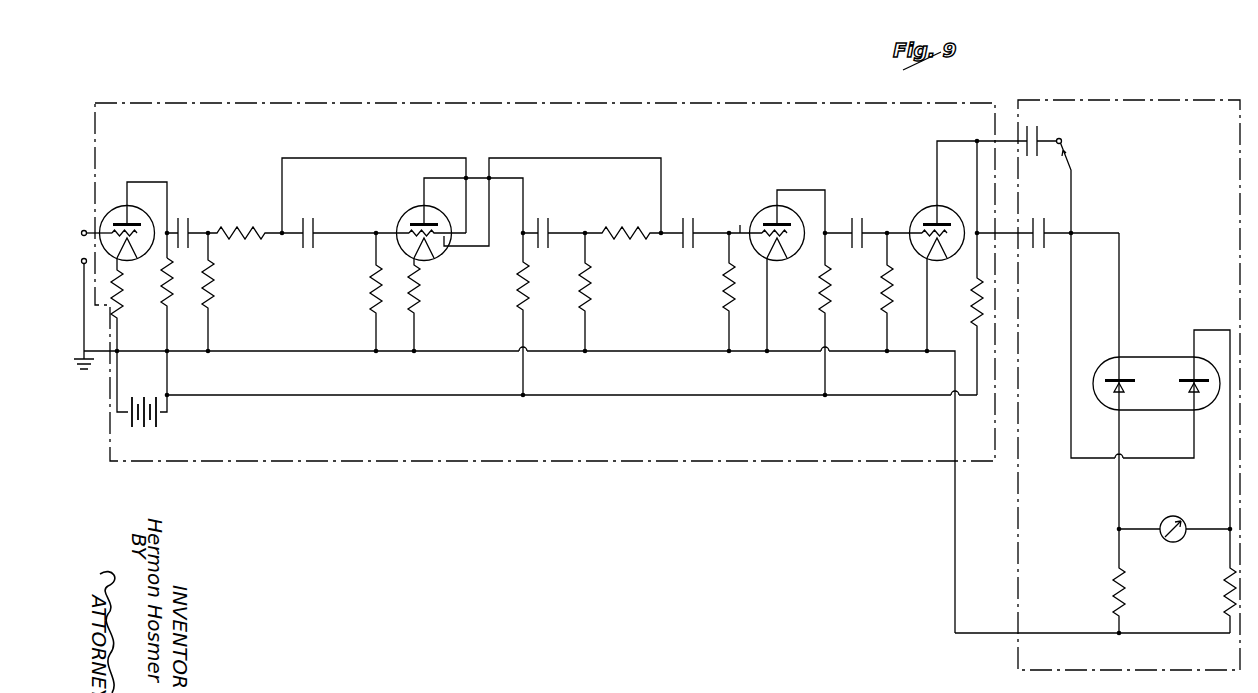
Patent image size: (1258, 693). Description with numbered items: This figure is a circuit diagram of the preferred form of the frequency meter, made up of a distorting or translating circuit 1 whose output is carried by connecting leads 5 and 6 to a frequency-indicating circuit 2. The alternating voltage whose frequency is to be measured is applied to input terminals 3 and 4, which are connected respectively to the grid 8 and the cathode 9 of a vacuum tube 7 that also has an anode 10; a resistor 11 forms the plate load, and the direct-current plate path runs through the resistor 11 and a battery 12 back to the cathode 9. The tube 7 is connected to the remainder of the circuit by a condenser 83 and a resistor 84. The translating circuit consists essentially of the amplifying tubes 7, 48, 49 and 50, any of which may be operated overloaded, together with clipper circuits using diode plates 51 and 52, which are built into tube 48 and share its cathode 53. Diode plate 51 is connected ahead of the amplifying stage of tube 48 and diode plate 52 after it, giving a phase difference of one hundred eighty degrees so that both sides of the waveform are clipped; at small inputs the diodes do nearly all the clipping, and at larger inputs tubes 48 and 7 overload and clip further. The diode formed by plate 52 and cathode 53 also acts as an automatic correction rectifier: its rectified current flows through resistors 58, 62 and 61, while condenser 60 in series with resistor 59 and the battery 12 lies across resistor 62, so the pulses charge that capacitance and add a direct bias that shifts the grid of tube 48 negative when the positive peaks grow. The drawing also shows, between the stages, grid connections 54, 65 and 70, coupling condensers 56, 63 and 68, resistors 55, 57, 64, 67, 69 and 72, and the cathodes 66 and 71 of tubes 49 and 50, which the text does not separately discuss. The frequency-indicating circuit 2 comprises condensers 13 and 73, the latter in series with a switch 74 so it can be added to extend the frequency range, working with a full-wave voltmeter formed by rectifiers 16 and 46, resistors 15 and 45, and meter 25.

The distorting or translating circuit 1 is at (553, 100).
The frequency-indicating circuit 2 is at (1090, 100).
The input terminal 3 is at (86, 231).
The input terminal 4 is at (88, 308).
The connecting lead 5 is at (1005, 236).
The connecting lead 6 is at (1000, 633).
The vacuum tube 7 is at (119, 209).
The grid or control electrode 8 is at (138, 250).
The cathode 9 is at (126, 262).
The anode 10 is at (134, 222).
The resistor 11 is at (164, 300).
The battery 12 is at (146, 400).
The condenser 13 is at (1041, 249).
The resistor 15 is at (1113, 580).
The rectifier 16 is at (1113, 383).
The meter 25 is at (1181, 520).
The resistor 45 is at (1223, 590).
The rectifier 46 is at (1199, 388).
The amplifying tube 48 is at (405, 213).
The amplifying tube 49 is at (761, 212).
The amplifying tube 50 is at (932, 207).
The diode plate 51 is at (440, 229).
The diode plate 52 is at (448, 243).
The cathode 53 is at (419, 256).
The grid lead 54 is at (380, 231).
The resistor 55 is at (233, 229).
The coupling condenser 56 is at (319, 228).
The grid resistor 57 is at (371, 282).
The resistor 58 is at (421, 305).
The resistor 59 is at (529, 277).
The capacitance 60 is at (551, 230).
The resistor 61 is at (620, 230).
The resistor 62 is at (593, 283).
The coupling condenser 63 is at (695, 228).
The grid resistor 64 is at (726, 292).
The grid lead 65 is at (745, 217).
The cathode 66 is at (771, 256).
The anode resistor 67 is at (829, 289).
The coupling condenser 68 is at (862, 230).
The grid resistor 69 is at (892, 284).
The grid lead 70 is at (888, 231).
The cathode 71 is at (929, 259).
The anode resistor 72 is at (975, 318).
The condenser 73 is at (1036, 128).
The switch 74 is at (1071, 162).
The condenser 83 is at (185, 216).
The resistor 84 is at (214, 283).